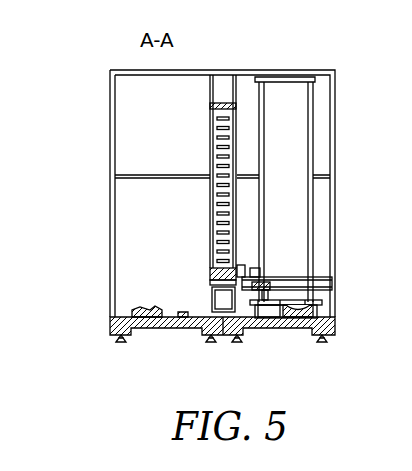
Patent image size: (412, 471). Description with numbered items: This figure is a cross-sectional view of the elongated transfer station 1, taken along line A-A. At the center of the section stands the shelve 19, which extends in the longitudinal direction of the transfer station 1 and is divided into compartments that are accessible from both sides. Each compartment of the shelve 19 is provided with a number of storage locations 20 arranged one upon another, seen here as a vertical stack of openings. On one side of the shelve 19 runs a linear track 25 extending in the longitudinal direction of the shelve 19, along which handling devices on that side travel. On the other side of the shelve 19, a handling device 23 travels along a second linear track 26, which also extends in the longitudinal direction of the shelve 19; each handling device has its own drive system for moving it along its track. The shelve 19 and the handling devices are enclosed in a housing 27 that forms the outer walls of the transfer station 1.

The transfer station 1 is at (345, 66).
The shelve 19 is at (209, 147).
The storage locations 20 is at (222, 222).
The handling device 23 is at (283, 258).
The linear track 25 is at (148, 327).
The linear track 26 is at (296, 328).
The housing 27 is at (110, 133).